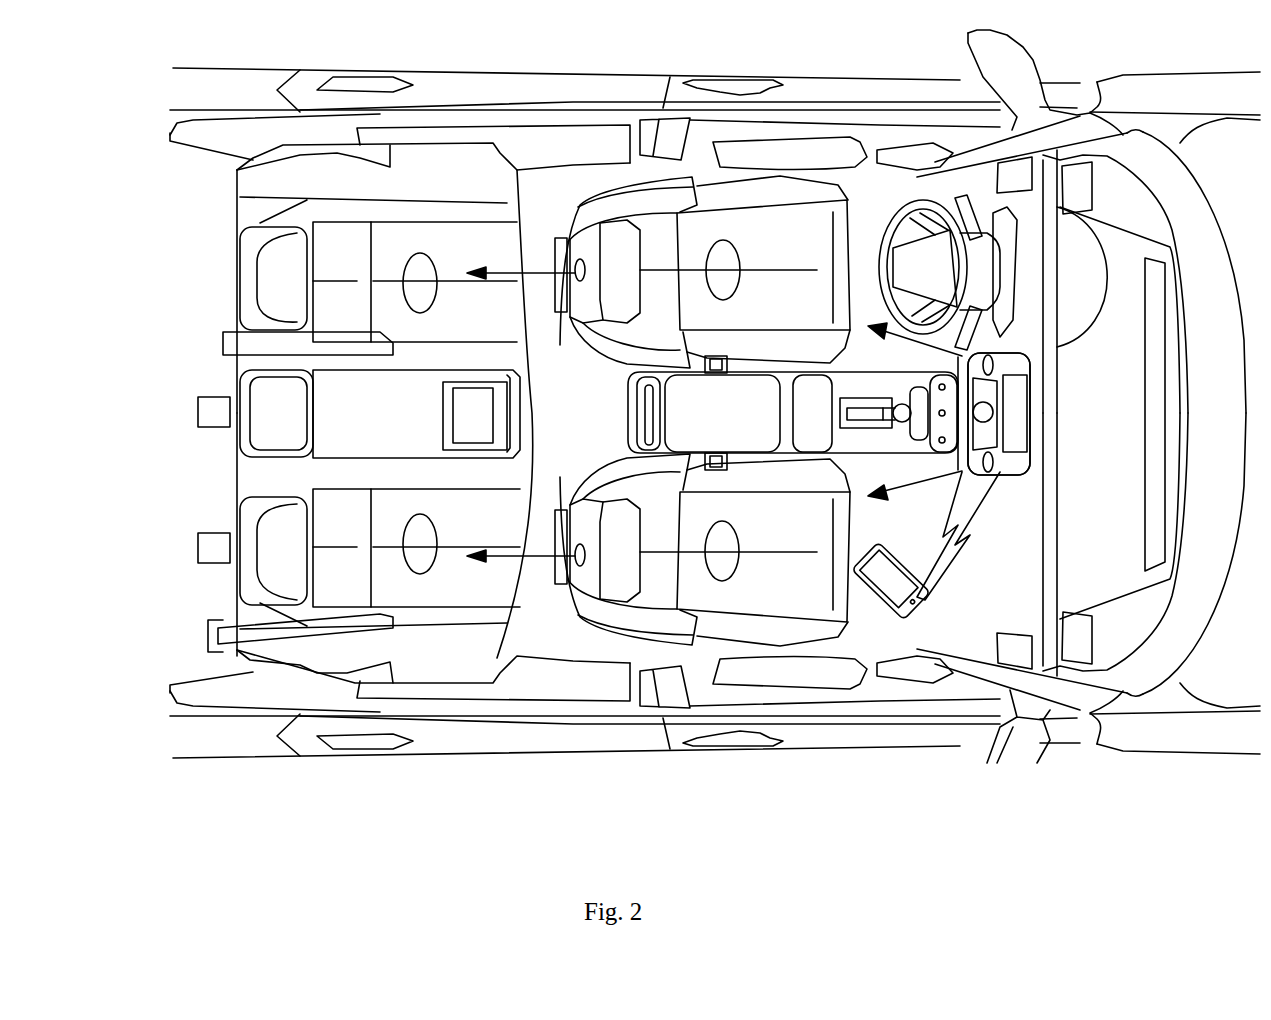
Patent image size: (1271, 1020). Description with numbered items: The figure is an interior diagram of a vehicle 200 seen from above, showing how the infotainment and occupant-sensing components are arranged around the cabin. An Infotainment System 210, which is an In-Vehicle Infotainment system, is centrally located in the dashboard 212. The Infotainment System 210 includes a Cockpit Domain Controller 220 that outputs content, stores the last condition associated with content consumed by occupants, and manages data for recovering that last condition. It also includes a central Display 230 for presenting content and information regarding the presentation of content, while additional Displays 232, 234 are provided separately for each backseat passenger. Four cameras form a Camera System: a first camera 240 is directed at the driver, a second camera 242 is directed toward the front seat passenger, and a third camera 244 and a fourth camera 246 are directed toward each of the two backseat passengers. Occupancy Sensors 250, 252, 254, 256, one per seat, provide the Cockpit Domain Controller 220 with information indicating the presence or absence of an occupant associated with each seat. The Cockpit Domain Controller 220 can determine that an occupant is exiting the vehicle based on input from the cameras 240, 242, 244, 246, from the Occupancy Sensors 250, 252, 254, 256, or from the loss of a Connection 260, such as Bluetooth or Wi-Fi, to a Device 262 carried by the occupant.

The vehicle 200 is at (115, 72).
The Infotainment System 210 is at (1033, 460).
The dashboard 212 is at (1033, 376).
The Cockpit Domain Controller 220 is at (994, 364).
The central Display 230 is at (1033, 403).
The Display 232 is at (560, 345).
The Display 234 is at (560, 477).
The first camera 240 is at (1025, 352).
The second camera 242 is at (1030, 465).
The third camera 244 is at (580, 258).
The fourth camera 246 is at (580, 567).
The Occupancy Sensor 250 is at (741, 262).
The Occupancy Sensor 252 is at (741, 560).
The Occupancy Sensor 254 is at (470, 250).
The Occupancy Sensor 256 is at (470, 518).
The Connection 260 is at (983, 513).
The Device 262 is at (927, 594).